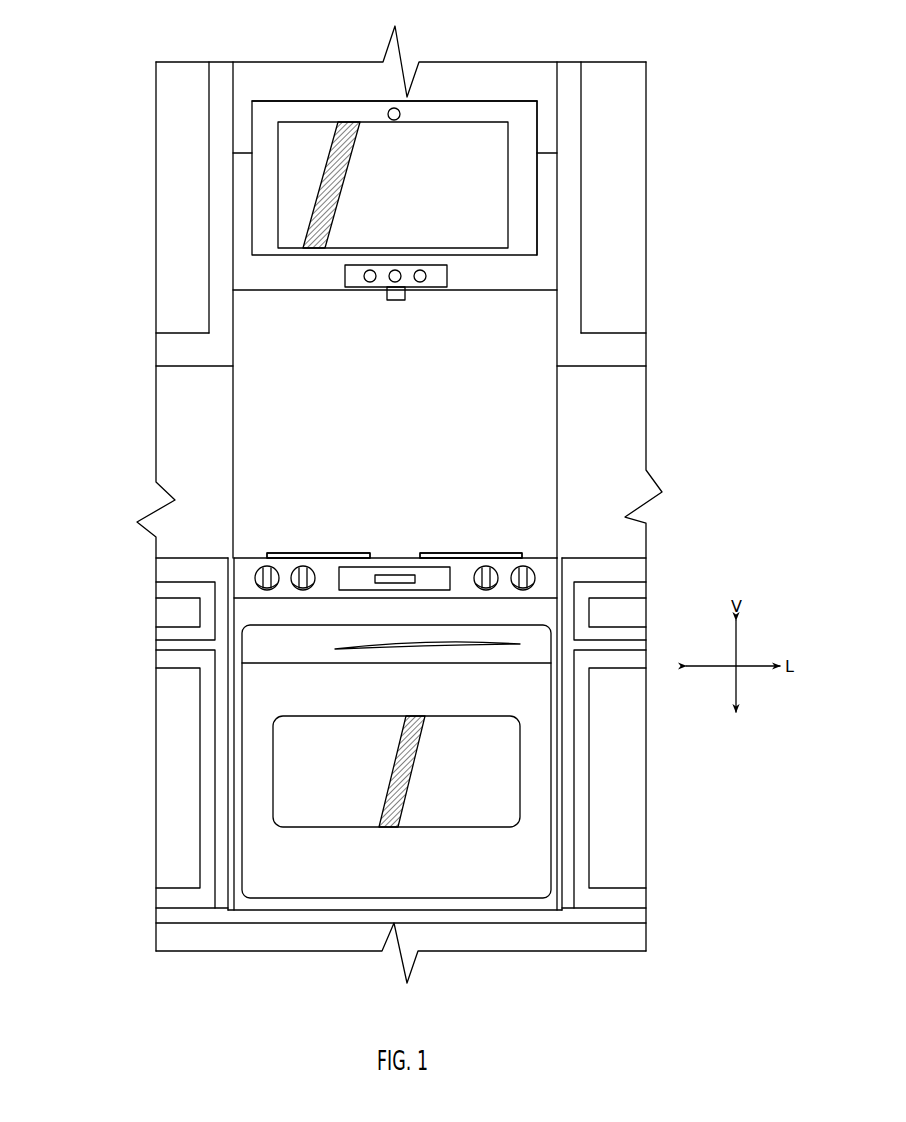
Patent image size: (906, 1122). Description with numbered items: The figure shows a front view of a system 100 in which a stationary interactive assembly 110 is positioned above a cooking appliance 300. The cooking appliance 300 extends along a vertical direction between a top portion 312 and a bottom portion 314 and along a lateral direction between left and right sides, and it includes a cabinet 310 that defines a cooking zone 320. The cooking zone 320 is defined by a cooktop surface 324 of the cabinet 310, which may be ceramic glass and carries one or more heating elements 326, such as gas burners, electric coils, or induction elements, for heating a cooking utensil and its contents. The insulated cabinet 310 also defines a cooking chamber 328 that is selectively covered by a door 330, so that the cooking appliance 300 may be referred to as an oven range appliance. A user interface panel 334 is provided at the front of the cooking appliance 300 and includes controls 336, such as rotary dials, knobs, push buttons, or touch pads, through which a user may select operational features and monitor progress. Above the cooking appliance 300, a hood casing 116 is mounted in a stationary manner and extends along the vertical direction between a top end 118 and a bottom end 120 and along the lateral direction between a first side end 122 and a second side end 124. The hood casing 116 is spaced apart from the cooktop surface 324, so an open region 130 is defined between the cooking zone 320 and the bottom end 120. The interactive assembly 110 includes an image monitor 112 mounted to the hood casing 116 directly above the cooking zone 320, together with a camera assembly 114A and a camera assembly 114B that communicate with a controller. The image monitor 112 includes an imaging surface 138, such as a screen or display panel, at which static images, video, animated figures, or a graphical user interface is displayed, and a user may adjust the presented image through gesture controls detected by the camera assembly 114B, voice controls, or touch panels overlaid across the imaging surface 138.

The system 100 is at (108, 112).
The interactive assembly 110 is at (440, 189).
The image monitor 112 is at (524, 121).
The camera assembly 114A is at (394, 301).
The camera assembly 114B is at (401, 113).
The hood casing 116 is at (538, 278).
The top end 118 is at (336, 96).
The bottom end 120 is at (479, 292).
The first side end 122 is at (559, 245).
The second side end 124 is at (231, 232).
The open region 130 is at (348, 421).
The imaging surface 138 is at (296, 192).
The cooking appliance 300 is at (404, 724).
The cabinet 310 is at (222, 899).
The top portion 312 is at (225, 556).
The bottom portion 314 is at (272, 913).
The cooking zone 320 is at (329, 508).
The cooktop surface 324 is at (251, 556).
The heating elements 326 is at (318, 555).
The cooking chamber 328 is at (348, 775).
The door 330 is at (542, 767).
The user interface panel 334 is at (549, 556).
The controls 336 is at (537, 577).